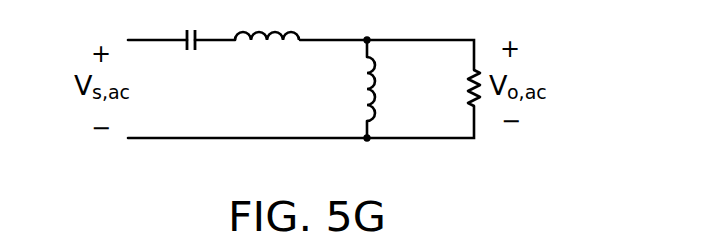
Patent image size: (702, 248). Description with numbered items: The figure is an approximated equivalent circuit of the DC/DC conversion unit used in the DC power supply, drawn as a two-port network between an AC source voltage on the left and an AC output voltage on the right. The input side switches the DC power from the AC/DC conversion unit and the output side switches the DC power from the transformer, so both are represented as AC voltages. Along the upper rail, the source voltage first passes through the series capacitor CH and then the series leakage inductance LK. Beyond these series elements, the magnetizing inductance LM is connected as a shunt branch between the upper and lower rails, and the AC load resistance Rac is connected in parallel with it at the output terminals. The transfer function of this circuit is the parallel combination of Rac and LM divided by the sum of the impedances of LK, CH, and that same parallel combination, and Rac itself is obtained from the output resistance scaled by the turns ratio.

The capacitor CH is at (190, 25).
The leakage inductance LK is at (267, 20).
The magnetizing inductance LM is at (352, 89).
The AC load resistance Rac is at (450, 88).